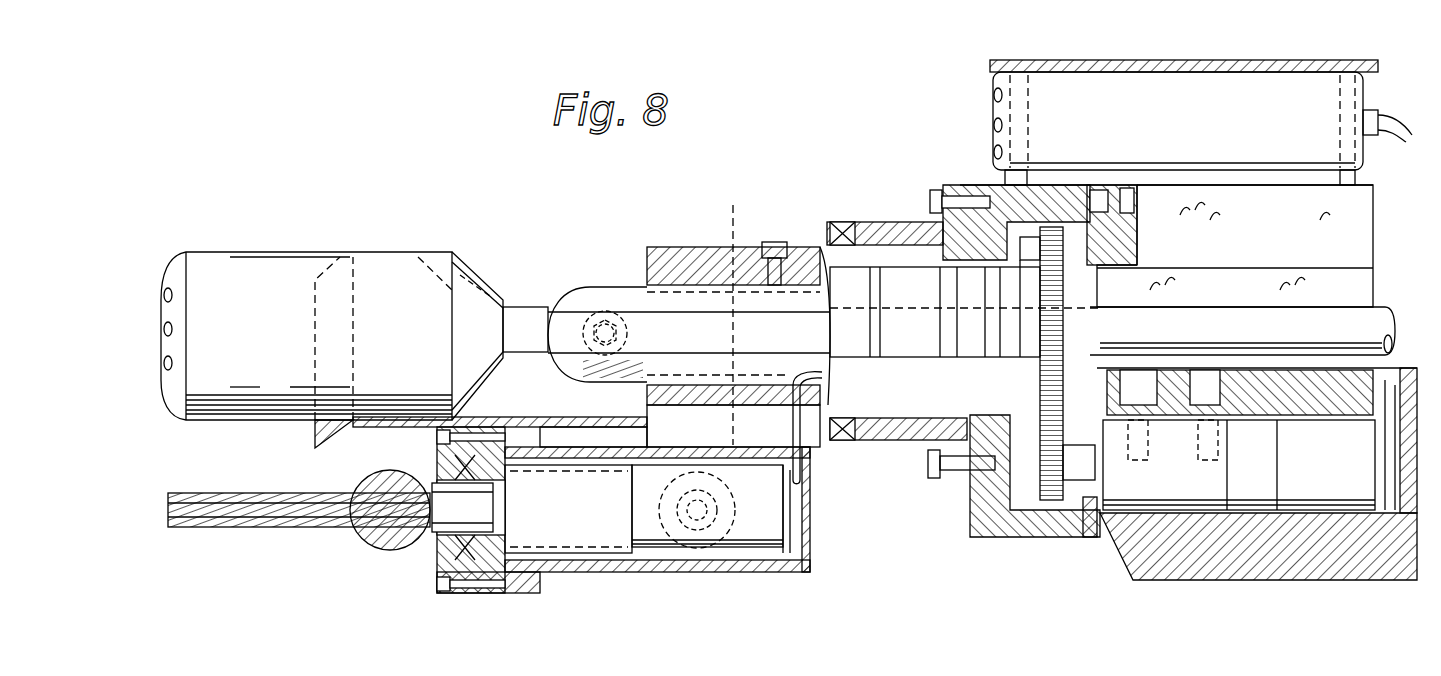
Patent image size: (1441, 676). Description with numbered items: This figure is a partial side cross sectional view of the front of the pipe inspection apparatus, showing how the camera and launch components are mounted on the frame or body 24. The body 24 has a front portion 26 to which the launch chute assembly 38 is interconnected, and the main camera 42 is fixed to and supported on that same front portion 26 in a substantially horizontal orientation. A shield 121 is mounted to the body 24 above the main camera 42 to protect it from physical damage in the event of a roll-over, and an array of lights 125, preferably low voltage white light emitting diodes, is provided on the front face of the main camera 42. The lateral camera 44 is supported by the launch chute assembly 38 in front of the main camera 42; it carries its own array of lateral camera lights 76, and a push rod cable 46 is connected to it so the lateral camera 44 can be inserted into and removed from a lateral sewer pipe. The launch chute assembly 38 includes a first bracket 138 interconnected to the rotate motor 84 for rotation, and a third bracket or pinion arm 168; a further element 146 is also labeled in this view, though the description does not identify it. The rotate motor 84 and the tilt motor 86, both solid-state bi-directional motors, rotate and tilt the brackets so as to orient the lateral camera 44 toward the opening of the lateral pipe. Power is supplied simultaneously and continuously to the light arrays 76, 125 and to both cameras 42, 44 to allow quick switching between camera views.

The frame or body 24 is at (1237, 555).
The front portion 26 is at (1243, 407).
The launch chute assembly 38 is at (658, 538).
The main camera 42 is at (1152, 96).
The lateral camera 44 is at (300, 326).
The push rod cable 46 is at (1372, 318).
The lateral camera lights 76 is at (164, 296).
The rotate motor 84 is at (1330, 485).
The tilt motor 86 is at (760, 512).
The shield 121 is at (1170, 58).
The lights 125 is at (994, 95).
The first bracket 138 is at (733, 255).
The tube 146 is at (812, 438).
The third bracket or pinion arm 168 is at (425, 543).